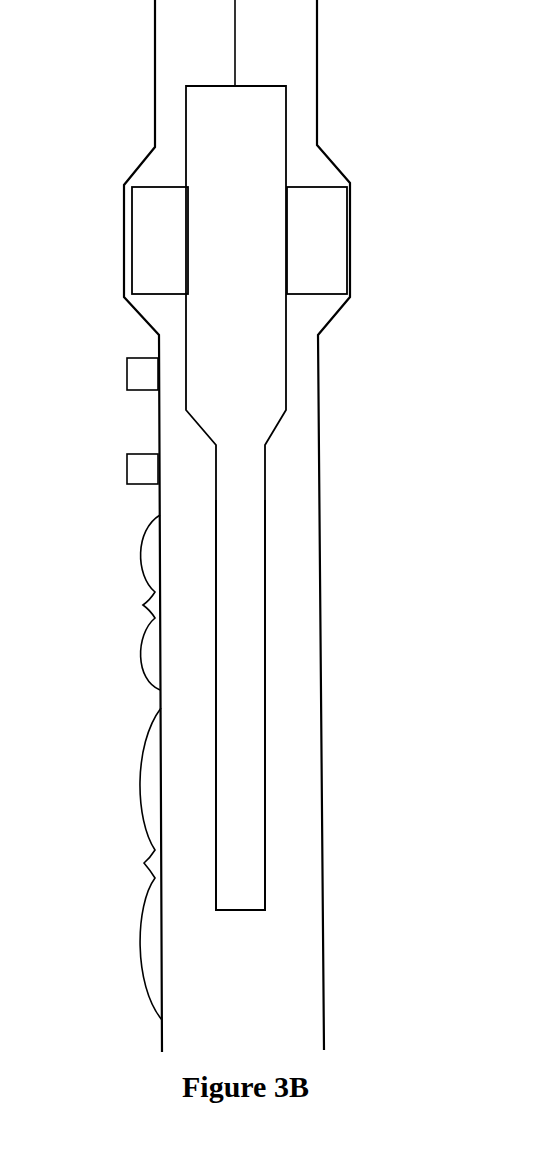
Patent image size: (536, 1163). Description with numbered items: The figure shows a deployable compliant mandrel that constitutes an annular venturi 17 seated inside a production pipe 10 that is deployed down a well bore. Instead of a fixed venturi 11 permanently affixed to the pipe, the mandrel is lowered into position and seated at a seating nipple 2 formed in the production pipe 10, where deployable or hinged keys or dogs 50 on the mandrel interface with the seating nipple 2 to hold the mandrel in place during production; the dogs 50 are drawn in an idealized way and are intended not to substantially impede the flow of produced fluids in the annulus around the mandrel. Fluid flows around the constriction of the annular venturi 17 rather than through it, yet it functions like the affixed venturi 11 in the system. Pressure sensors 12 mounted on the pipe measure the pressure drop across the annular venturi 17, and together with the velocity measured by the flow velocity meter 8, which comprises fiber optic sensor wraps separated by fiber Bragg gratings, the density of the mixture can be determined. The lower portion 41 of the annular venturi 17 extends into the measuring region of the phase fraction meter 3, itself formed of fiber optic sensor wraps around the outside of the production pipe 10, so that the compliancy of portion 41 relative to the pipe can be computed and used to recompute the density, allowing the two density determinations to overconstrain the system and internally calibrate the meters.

The seating nipple 2 is at (131, 213).
The phase fraction meter 3 is at (144, 864).
The flow velocity meter 8 is at (140, 602).
The production pipe 10 is at (318, 132).
The venturi 11 is at (235, 40).
The pressure sensors 12 is at (127, 468).
The annular venturi 17 is at (253, 278).
The portion of the venturi 41 is at (238, 627).
The dogs 50 is at (140, 247).